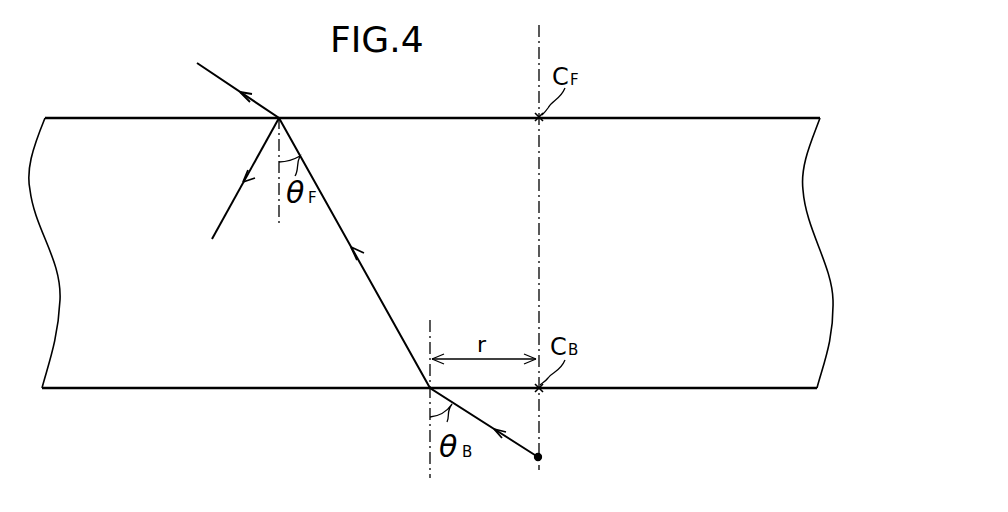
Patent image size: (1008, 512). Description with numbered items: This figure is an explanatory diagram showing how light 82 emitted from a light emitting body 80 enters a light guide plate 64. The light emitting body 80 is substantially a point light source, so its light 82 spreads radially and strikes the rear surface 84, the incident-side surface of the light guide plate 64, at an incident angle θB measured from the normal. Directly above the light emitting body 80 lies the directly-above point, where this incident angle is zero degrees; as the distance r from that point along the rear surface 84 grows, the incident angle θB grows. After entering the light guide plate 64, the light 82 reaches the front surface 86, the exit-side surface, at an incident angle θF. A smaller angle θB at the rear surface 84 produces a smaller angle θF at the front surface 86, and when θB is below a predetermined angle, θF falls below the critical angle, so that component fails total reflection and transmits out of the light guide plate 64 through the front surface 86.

The light guide plate 64 is at (803, 222).
The front surface 86 is at (677, 117).
The rear surface 84 is at (677, 390).
The light emitting body 80 is at (545, 457).
The light 82 is at (514, 445).